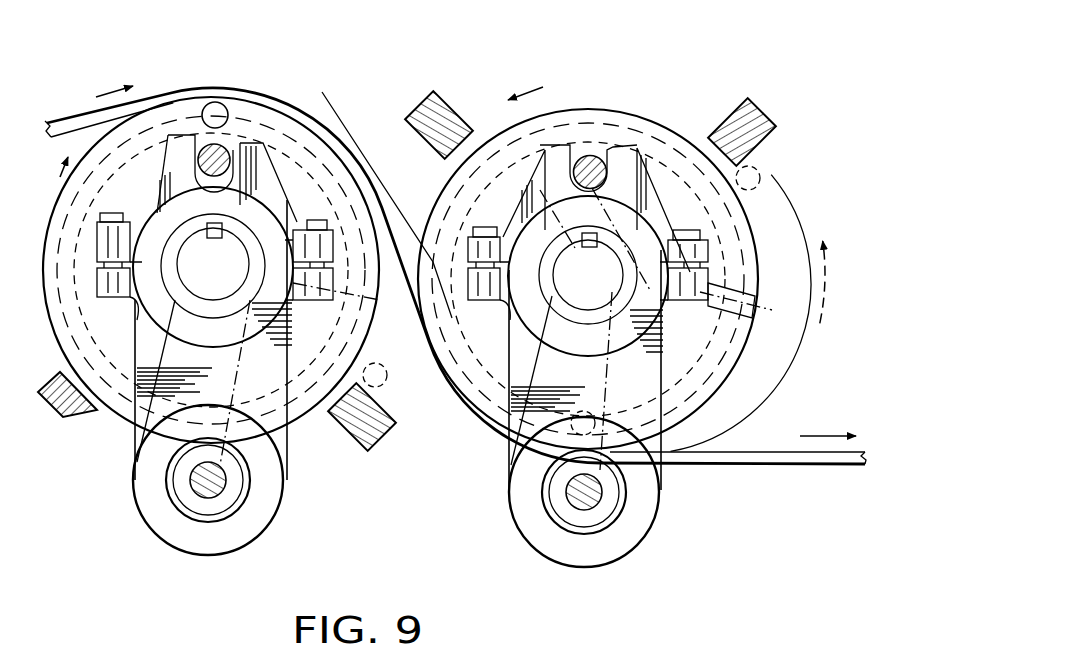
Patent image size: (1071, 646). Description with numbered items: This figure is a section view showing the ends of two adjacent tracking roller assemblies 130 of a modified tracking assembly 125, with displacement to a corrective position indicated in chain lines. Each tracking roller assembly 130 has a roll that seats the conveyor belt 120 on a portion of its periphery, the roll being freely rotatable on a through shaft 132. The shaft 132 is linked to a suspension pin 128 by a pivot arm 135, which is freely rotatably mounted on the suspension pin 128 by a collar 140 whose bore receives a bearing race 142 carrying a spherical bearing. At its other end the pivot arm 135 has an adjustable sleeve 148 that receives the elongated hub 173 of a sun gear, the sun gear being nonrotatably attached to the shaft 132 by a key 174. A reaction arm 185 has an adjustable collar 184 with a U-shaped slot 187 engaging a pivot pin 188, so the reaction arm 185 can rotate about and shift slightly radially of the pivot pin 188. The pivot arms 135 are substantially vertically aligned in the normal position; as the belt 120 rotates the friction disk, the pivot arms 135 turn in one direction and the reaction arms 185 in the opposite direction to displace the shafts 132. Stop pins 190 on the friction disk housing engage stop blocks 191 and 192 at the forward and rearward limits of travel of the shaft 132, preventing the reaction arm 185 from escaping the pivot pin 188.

The conveyor belt 120 is at (200, 90).
The tracking assembly 125 is at (190, 66).
The suspension pin 128 is at (190, 481).
The tracking roller assembly 130 is at (322, 103).
The through shaft 132 is at (233, 294).
The pivot arm 135 is at (289, 354).
The collar 140 is at (168, 530).
The bearing race 142 is at (183, 493).
The adjustable sleeve 148 is at (187, 328).
The elongated hub 173 is at (288, 308).
The key 174 is at (207, 229).
The adjustable collar 184 is at (124, 292).
The reaction arm 185 is at (263, 176).
The U-shaped slot 187 is at (231, 157).
The pivot pin 188 is at (197, 163).
The stop pin 190 is at (230, 112).
The stop block 191 is at (380, 404).
The stop block 192 is at (72, 437).